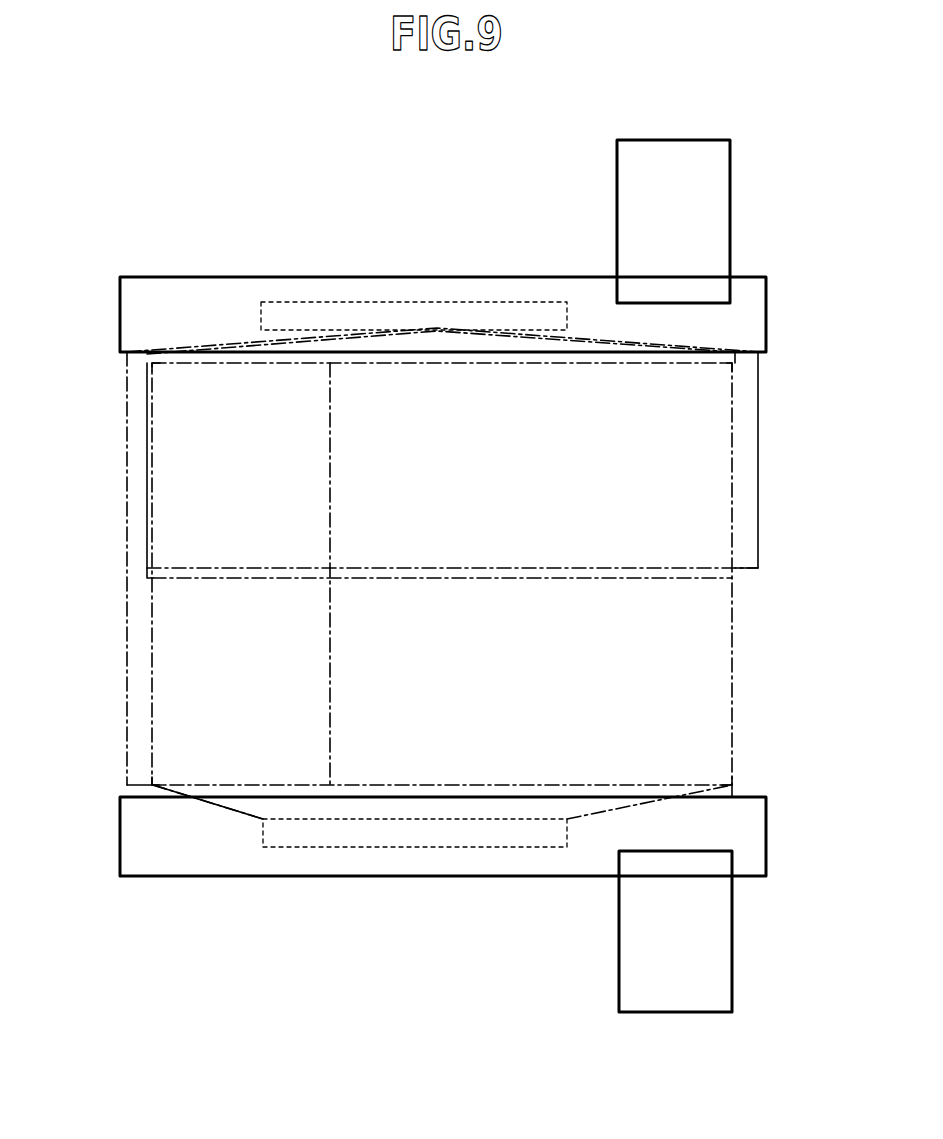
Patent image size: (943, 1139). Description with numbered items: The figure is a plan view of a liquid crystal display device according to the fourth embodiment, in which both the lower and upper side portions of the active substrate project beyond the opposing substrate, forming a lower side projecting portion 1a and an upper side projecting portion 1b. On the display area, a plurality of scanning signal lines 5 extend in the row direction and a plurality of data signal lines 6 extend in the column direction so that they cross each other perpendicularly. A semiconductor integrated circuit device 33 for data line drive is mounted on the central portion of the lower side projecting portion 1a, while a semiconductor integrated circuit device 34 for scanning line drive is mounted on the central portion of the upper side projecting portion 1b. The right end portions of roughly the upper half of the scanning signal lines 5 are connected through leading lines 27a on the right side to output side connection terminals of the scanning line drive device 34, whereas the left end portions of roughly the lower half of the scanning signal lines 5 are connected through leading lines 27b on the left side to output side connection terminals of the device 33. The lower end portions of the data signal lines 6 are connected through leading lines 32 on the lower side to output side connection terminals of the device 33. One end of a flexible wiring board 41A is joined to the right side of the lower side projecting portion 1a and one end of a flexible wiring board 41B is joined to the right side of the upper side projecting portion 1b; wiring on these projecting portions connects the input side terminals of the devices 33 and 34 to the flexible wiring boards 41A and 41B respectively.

The lower side projecting portion 1a is at (755, 831).
The upper side projecting portion 1b is at (755, 310).
The scanning signal lines 5 is at (501, 566).
The data signal lines 6 is at (332, 663).
The leading lines 27a is at (740, 469).
The leading lines 27b is at (140, 692).
The leading lines 32 is at (248, 808).
The semiconductor integrated circuit device for data line drive 33 is at (352, 830).
The semiconductor integrated circuit device for scanning line drive 34 is at (342, 310).
The flexible wiring board 41A is at (720, 955).
The flexible wiring board 41B is at (717, 193).